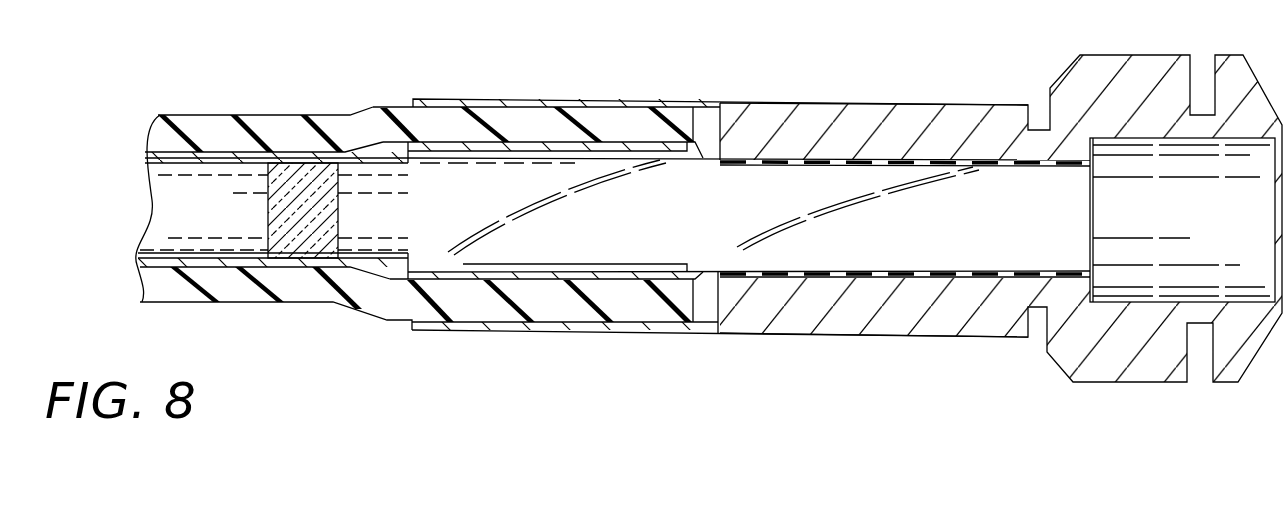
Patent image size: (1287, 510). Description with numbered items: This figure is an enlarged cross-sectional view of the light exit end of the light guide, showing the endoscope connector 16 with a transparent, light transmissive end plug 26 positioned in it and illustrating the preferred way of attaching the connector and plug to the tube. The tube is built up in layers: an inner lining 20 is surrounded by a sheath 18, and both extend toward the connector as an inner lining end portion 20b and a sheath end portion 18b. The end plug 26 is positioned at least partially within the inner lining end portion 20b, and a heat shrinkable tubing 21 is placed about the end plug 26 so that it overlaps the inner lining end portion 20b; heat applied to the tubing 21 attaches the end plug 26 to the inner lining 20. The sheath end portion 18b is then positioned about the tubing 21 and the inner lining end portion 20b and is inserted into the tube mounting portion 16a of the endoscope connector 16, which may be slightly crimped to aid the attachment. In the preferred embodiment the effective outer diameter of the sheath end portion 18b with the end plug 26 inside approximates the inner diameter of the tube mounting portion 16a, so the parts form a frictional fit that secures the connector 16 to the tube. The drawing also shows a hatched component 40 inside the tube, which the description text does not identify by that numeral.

The endoscope connector 16 is at (902, 70).
The tube mounting portion 16a is at (622, 328).
The sheath 18 is at (195, 127).
The sheath end portion 18b is at (523, 127).
The inner lining 20 is at (225, 265).
The inner lining end portion 20b is at (450, 152).
The heat shrinkable tubing 21 is at (533, 280).
The end plug 26 is at (632, 205).
The plug 40 is at (288, 175).